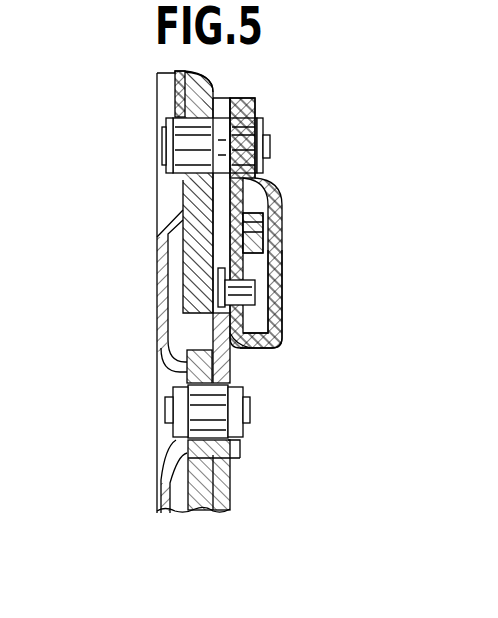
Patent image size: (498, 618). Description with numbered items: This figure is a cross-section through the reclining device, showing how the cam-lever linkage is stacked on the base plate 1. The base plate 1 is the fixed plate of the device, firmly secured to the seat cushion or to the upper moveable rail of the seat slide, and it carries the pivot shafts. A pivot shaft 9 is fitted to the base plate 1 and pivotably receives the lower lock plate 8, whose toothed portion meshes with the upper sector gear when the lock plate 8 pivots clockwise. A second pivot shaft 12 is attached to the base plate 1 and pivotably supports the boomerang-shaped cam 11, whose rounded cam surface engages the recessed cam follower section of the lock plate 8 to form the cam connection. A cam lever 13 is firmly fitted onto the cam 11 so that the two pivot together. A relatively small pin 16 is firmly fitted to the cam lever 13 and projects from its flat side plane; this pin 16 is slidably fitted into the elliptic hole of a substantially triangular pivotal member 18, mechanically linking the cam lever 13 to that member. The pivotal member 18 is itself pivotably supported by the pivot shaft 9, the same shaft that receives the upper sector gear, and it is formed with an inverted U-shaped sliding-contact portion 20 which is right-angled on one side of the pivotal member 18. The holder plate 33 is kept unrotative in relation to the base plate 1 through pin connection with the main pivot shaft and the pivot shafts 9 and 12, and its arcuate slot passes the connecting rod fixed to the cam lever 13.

The base plate 1 is at (158, 292).
The lower lock plate 8 is at (247, 88).
The pivot shaft 9 is at (183, 150).
The boomerang-shaped cam 11 is at (205, 370).
The pivot shaft 12 is at (250, 410).
The cam lever 13 is at (240, 360).
The pin 16 is at (247, 292).
The pivotal member 18 is at (265, 195).
The sliding-contact portion 20 is at (262, 237).
The holder plate 33 is at (270, 335).